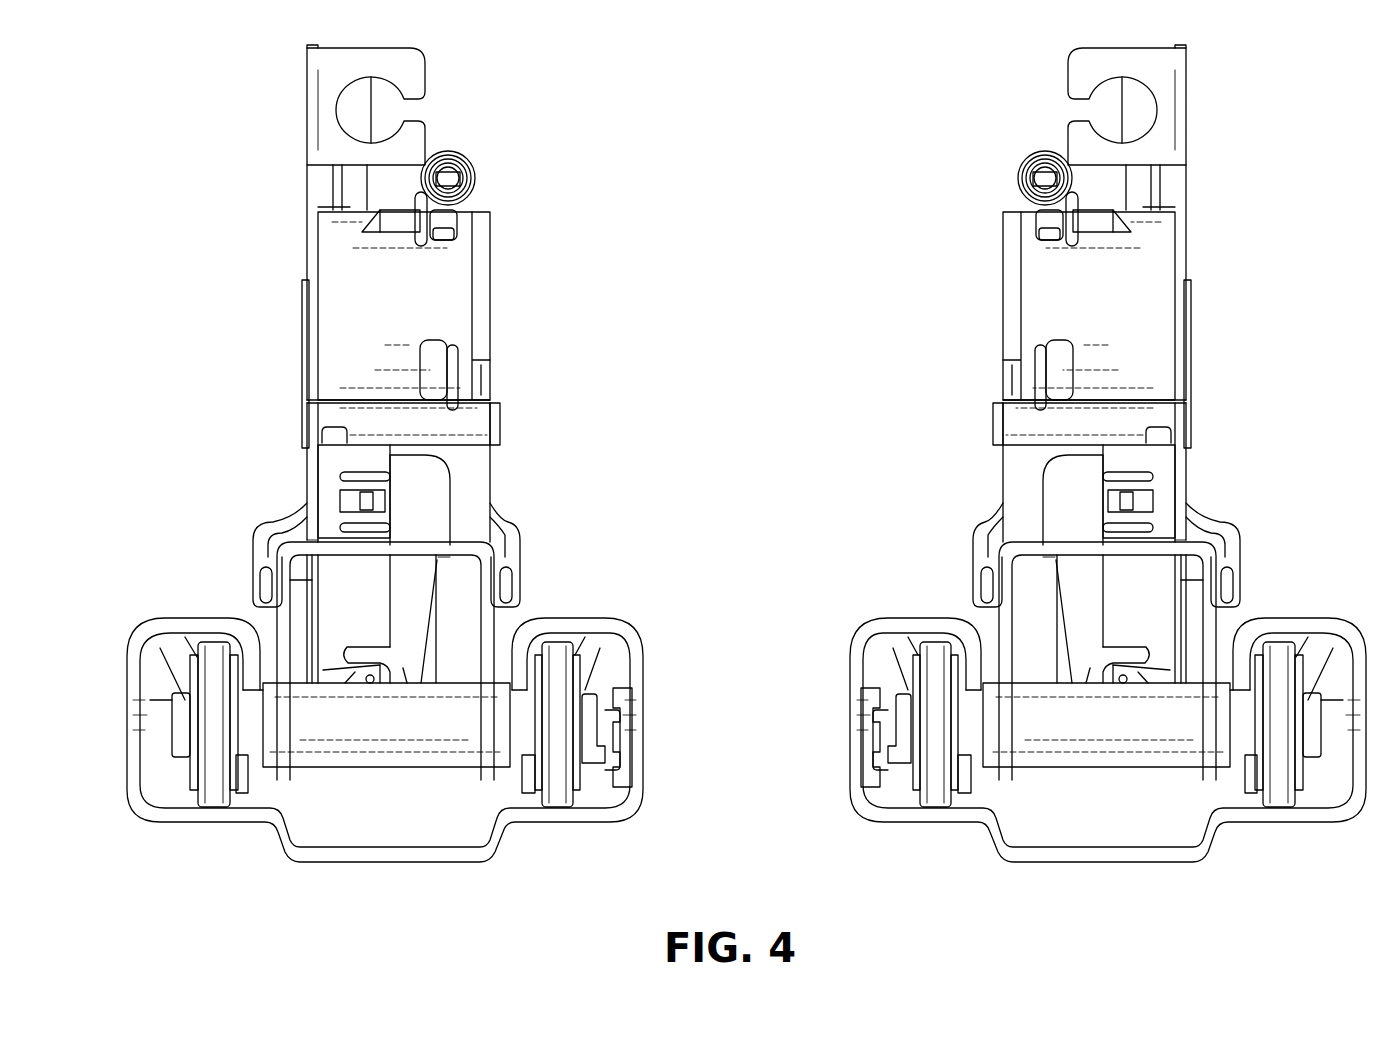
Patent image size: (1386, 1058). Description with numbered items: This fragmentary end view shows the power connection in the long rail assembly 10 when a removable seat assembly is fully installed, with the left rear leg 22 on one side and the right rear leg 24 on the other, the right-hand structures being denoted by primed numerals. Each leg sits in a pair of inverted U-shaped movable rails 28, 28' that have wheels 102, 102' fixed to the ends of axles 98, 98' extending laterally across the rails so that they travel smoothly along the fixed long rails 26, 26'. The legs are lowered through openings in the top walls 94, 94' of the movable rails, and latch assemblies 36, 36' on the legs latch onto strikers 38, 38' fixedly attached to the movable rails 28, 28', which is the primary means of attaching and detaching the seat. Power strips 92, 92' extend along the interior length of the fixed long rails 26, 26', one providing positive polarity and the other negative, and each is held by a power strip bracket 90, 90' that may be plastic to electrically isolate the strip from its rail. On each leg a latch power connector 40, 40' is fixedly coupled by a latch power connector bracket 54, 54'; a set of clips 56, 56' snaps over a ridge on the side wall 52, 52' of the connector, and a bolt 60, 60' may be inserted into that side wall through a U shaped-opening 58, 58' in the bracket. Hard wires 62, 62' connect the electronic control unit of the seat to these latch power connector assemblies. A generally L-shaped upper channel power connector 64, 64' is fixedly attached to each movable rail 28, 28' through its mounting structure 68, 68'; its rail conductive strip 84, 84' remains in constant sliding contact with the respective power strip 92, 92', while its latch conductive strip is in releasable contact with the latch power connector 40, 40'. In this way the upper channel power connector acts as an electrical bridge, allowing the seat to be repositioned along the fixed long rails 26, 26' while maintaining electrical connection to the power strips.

The long rail assembly 10 is at (142, 506).
The left rear leg 22 is at (453, 279).
The right rear leg 24 is at (1056, 287).
The fixed long rail 26 is at (385, 769).
The fixed long rail 26' is at (1108, 769).
The movable rail 28 is at (418, 614).
The movable rail 28' is at (1081, 622).
The latch assembly 36 is at (317, 153).
The latch assembly 36' is at (1168, 153).
The striker 38 is at (352, 539).
The striker 38' is at (1135, 537).
The latch power connector 40 is at (473, 447).
The latch power connector 40' is at (1017, 456).
The side wall 52 is at (415, 737).
The side wall 52' is at (1054, 737).
The latch power connector bracket 54 is at (274, 614).
The latch power connector bracket 54' is at (1230, 602).
The clips 56 is at (316, 491).
The clips 56' is at (1182, 490).
The U shaped-opening 58 is at (369, 737).
The U shaped-opening 58' is at (1088, 741).
The bolt 60 is at (346, 724).
The bolt 60' is at (1144, 726).
The hard wire 62 is at (349, 456).
The hard wire 62' is at (1132, 456).
The upper channel power connector 64 is at (498, 579).
The upper channel power connector 64' is at (989, 573).
The mounting structure 68 is at (499, 560).
The mounting structure 68' is at (988, 564).
The rail conductive strip 84 is at (437, 720).
The rail conductive strip 84' is at (1046, 723).
The power strip bracket 90 is at (663, 748).
The power strip bracket 90' is at (818, 762).
The power strip 92 is at (654, 740).
The power strip 92' is at (831, 740).
The top wall 94 is at (427, 550).
The top wall 94' is at (1067, 551).
The axle 98 is at (386, 800).
The axle 98' is at (1106, 799).
The wheels 102 is at (379, 768).
The wheels 102' is at (1114, 770).